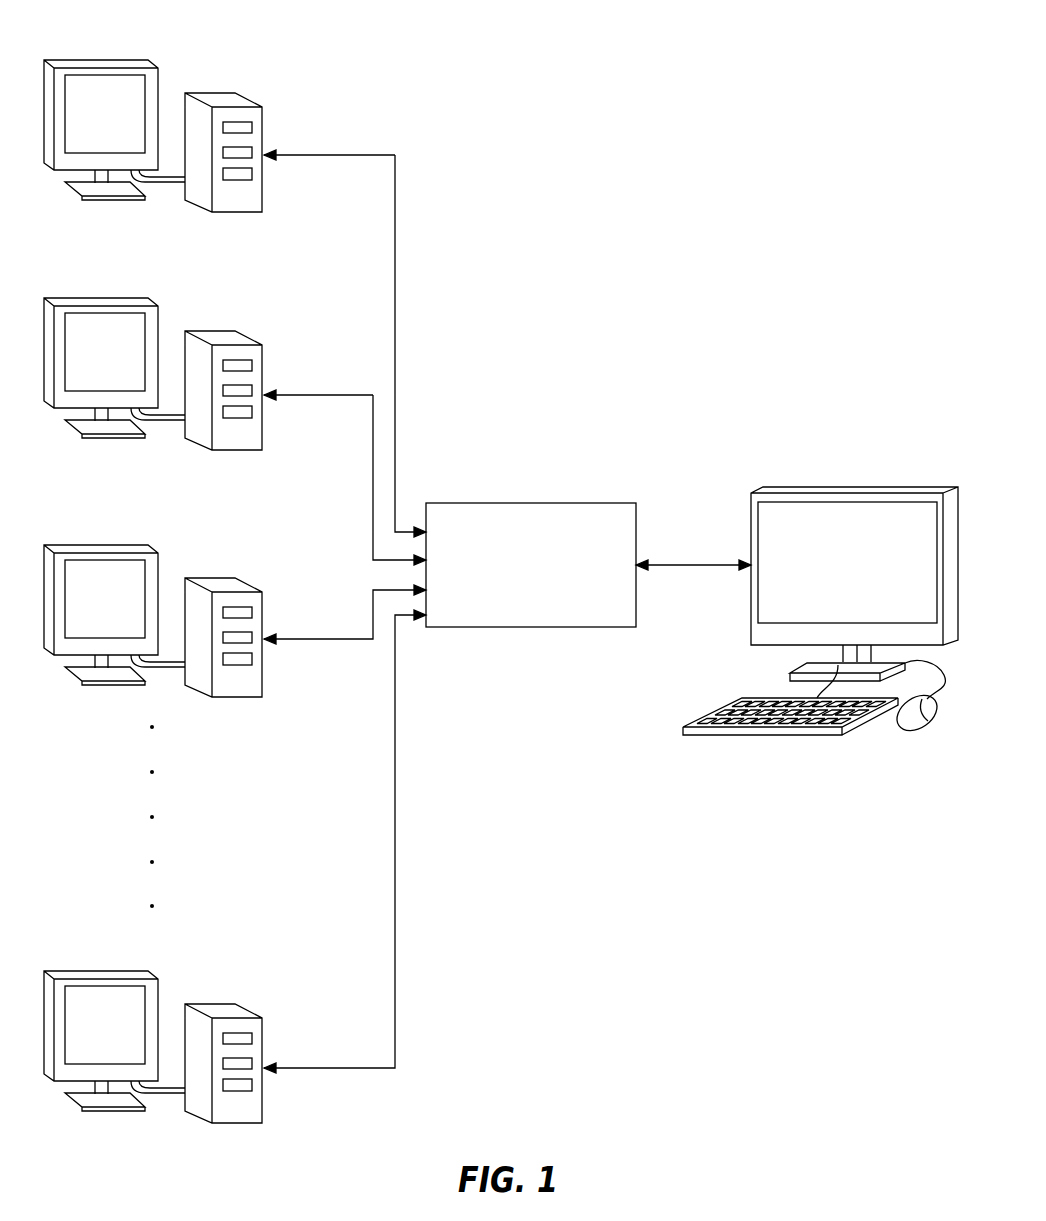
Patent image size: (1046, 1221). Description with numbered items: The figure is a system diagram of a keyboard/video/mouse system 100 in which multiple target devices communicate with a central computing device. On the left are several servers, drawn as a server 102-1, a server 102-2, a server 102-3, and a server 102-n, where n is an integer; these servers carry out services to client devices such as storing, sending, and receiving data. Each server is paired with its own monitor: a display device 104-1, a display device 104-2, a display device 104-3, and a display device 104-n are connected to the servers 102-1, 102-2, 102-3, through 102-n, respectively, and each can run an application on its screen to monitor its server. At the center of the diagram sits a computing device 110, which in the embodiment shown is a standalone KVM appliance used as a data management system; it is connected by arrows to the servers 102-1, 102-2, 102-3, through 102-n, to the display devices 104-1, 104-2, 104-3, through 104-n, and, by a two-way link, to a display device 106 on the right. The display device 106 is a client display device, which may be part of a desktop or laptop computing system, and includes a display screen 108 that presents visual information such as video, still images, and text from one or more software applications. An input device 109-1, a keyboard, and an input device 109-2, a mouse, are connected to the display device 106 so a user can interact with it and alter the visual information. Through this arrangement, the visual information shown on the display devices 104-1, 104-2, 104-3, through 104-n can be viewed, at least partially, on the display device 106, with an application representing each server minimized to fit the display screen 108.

The KVM system 100 is at (702, 222).
The server 102-1 is at (258, 105).
The server 102-2 is at (228, 369).
The server 102-3 is at (228, 617).
The server 102-n is at (228, 1043).
The display device 104-1 is at (108, 60).
The display device 104-2 is at (114, 342).
The display device 104-3 is at (114, 589).
The display device 104-n is at (114, 1017).
The display device 106 is at (940, 487).
The display screen 108 is at (833, 571).
The input device 109-1 is at (712, 712).
The input device 109-2 is at (927, 729).
The computing device 110 is at (511, 569).